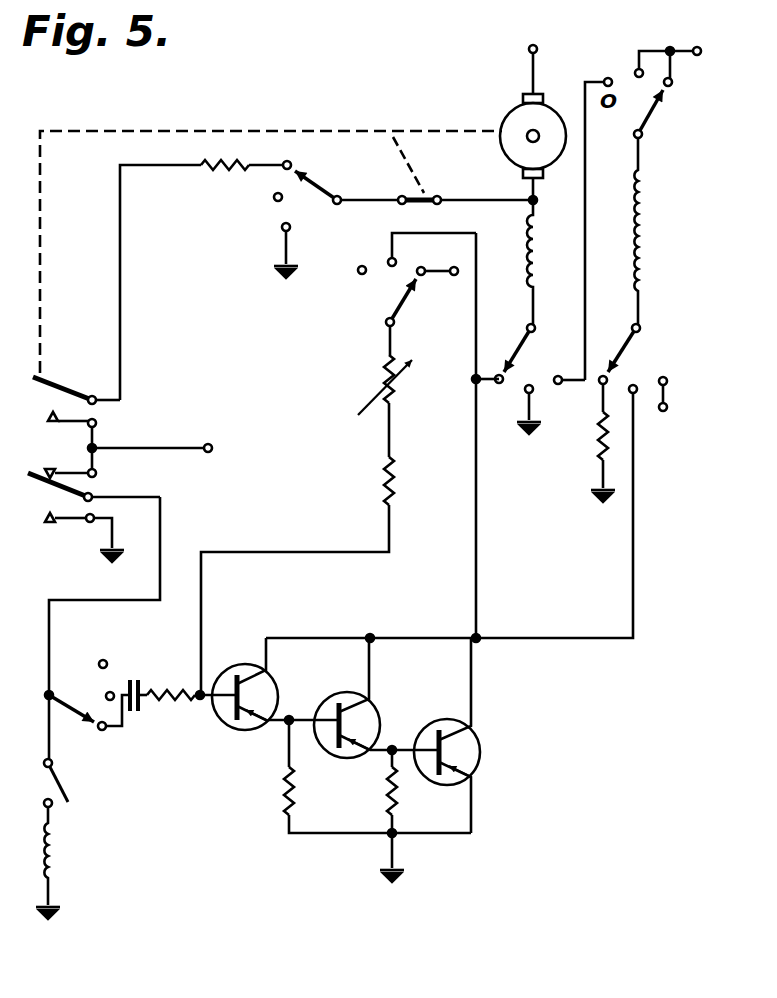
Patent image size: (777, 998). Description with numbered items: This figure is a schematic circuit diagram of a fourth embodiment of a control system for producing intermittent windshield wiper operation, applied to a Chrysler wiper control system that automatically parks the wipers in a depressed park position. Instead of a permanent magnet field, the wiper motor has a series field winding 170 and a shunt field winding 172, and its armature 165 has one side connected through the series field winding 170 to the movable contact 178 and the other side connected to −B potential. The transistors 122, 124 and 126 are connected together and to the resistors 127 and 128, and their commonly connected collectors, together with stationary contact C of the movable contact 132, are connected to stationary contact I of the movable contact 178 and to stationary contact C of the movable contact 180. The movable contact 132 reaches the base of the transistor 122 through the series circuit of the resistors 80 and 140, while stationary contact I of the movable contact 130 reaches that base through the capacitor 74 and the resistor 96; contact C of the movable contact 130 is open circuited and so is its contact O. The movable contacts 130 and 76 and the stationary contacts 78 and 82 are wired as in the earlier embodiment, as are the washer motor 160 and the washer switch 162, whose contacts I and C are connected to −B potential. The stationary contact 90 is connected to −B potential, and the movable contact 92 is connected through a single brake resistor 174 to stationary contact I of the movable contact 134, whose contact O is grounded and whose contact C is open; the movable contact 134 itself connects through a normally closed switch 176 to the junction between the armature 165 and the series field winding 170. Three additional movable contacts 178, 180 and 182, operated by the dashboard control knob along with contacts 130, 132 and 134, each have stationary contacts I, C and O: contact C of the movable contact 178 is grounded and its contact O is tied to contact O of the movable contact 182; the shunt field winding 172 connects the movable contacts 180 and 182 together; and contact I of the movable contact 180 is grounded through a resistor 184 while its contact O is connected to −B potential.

The armature 165 is at (527, 132).
The brake resistor 174 is at (236, 178).
The movable contact 134 is at (328, 188).
The normally closed switch 176 is at (433, 194).
The movable contact 132 is at (403, 298).
The resistor 80 is at (382, 376).
The resistor 140 is at (385, 480).
The series field winding 170 is at (524, 258).
The movable contact 178 is at (516, 349).
The movable contact 182 is at (651, 114).
The shunt field winding 172 is at (646, 218).
The movable contact 180 is at (625, 351).
The resistor 184 is at (598, 441).
The movable contact 92 is at (65, 389).
The stationary contact 90 is at (70, 425).
The stationary contact 78 is at (72, 469).
The movable contact 76 is at (56, 491).
The stationary contact 82 is at (85, 528).
The movable contact 130 is at (76, 716).
The capacitor 74 is at (140, 684).
The resistor 96 is at (168, 706).
The washer switch 162 is at (64, 791).
The washer motor 160 is at (58, 867).
The transistor 122 is at (241, 664).
The transistor 124 is at (341, 692).
The transistor 126 is at (443, 720).
The resistor 127 is at (285, 791).
The resistor 128 is at (398, 786).